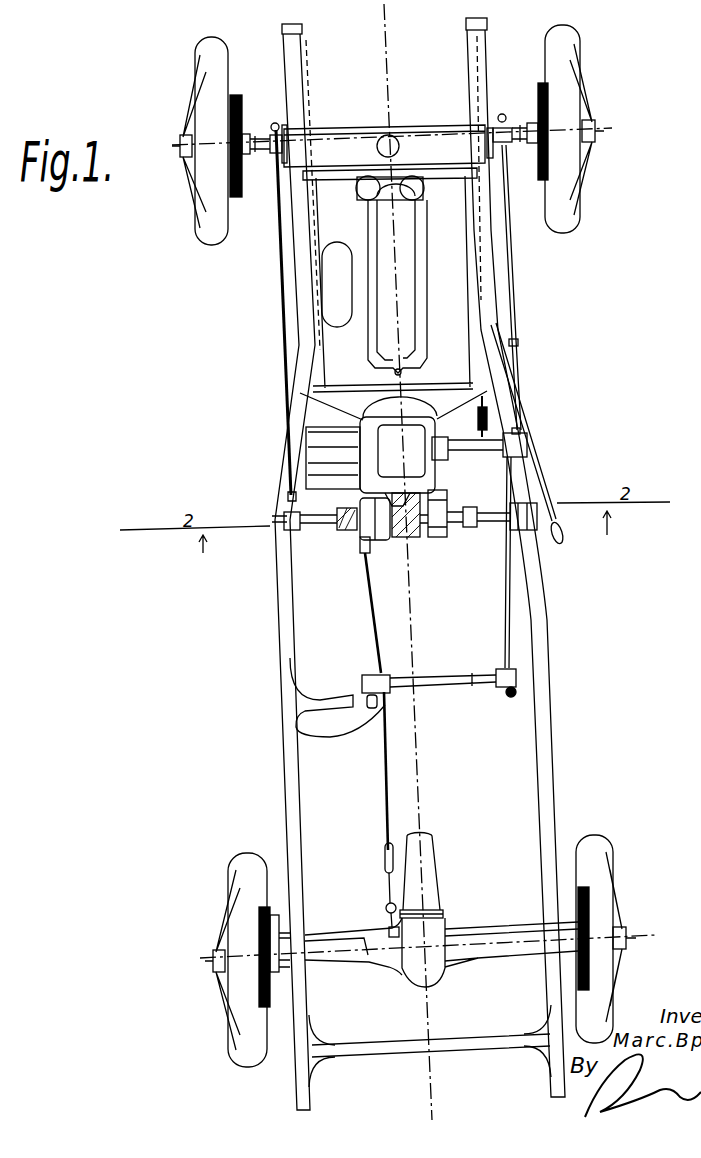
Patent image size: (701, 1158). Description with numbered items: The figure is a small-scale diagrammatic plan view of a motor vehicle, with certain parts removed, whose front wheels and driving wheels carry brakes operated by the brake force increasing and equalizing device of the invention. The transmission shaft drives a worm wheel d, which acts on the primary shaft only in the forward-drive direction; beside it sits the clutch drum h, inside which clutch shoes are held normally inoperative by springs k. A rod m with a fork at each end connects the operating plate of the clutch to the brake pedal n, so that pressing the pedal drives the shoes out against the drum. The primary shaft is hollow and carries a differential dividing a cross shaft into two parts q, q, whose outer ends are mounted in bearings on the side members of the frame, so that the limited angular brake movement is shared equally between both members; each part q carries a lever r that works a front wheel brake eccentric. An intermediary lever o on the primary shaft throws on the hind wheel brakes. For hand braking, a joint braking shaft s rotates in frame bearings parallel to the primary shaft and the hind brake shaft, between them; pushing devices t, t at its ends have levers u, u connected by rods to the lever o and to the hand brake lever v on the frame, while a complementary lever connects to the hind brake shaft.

The worm wheel d is at (385, 492).
The lever r is at (282, 503).
The spring k is at (278, 510).
The differential shaft part q is at (277, 518).
The intermediary lever o is at (362, 552).
The clutch drum h is at (443, 540).
The brake pedal n is at (487, 420).
The rod m is at (523, 463).
The hand brake lever v is at (548, 500).
The joint braking shaft s is at (471, 678).
The pushing device t is at (363, 677).
The lever u is at (370, 698).